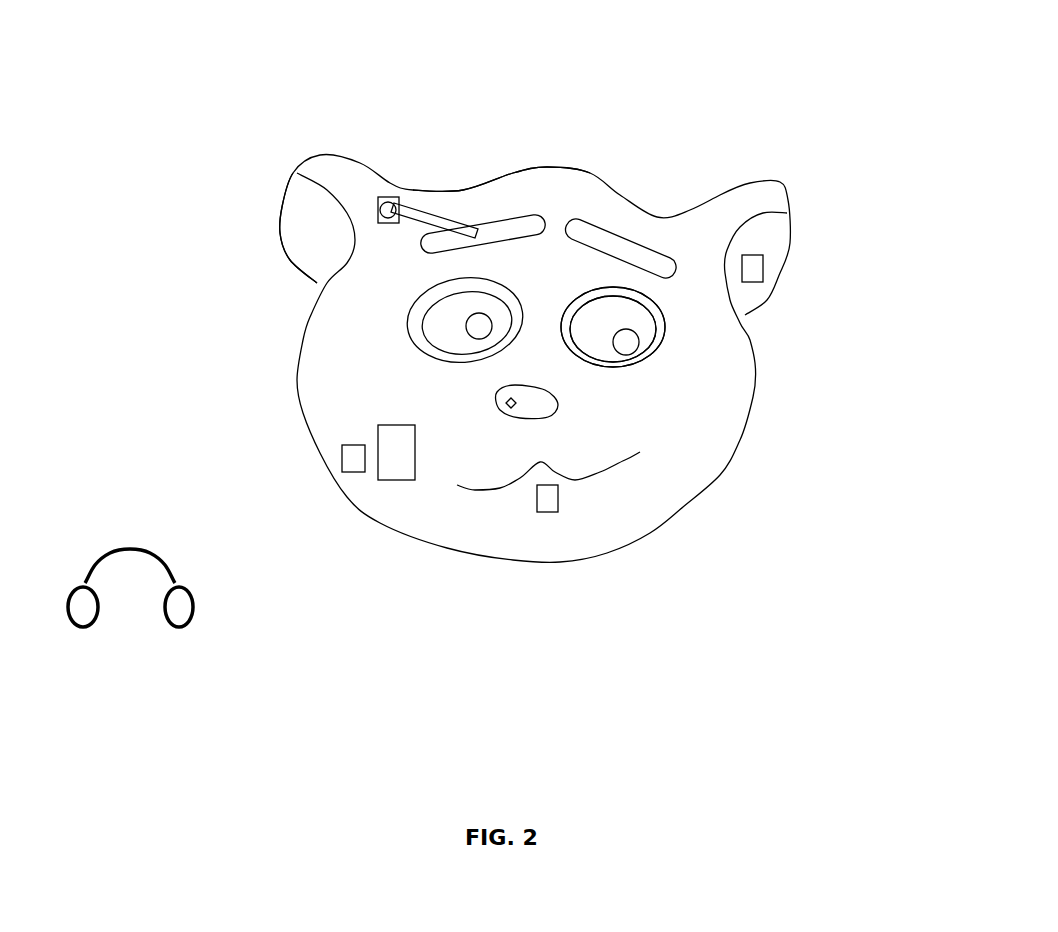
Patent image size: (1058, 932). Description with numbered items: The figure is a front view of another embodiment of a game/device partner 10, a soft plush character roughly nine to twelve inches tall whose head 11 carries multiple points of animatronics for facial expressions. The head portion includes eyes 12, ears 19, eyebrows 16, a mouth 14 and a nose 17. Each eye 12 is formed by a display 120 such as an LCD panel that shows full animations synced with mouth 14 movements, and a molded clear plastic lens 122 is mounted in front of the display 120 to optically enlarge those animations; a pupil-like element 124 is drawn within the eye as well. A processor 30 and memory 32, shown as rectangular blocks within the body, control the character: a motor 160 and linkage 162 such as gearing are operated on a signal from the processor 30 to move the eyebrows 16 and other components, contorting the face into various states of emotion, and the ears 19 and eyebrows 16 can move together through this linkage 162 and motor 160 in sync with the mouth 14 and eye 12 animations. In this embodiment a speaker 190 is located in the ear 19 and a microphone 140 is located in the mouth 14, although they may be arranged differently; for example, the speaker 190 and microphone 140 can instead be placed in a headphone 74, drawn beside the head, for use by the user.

The game/device partner 10 is at (833, 262).
The head 11 is at (595, 187).
The eyes 12 is at (407, 325).
The mouth 14 is at (573, 480).
The eyebrows 16 is at (533, 217).
The nose 17 is at (497, 403).
The ears 19 is at (307, 223).
The processor 30 is at (397, 470).
The memory 32 is at (352, 468).
The headphone 74 is at (80, 615).
The displays 120 is at (632, 352).
The lens 122 is at (655, 338).
The pupil camera 124 is at (630, 350).
The microphone 140 is at (547, 498).
The motor 160 is at (390, 197).
The linkage 162 is at (430, 212).
The speaker 190 is at (745, 273).